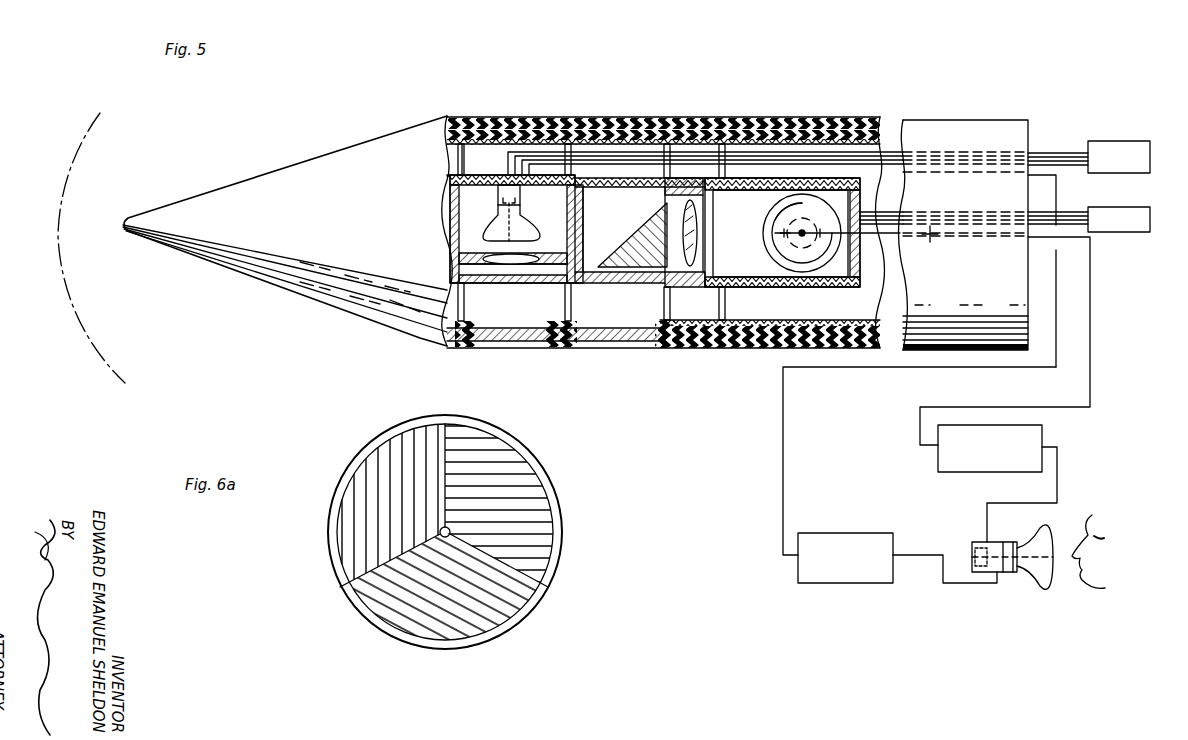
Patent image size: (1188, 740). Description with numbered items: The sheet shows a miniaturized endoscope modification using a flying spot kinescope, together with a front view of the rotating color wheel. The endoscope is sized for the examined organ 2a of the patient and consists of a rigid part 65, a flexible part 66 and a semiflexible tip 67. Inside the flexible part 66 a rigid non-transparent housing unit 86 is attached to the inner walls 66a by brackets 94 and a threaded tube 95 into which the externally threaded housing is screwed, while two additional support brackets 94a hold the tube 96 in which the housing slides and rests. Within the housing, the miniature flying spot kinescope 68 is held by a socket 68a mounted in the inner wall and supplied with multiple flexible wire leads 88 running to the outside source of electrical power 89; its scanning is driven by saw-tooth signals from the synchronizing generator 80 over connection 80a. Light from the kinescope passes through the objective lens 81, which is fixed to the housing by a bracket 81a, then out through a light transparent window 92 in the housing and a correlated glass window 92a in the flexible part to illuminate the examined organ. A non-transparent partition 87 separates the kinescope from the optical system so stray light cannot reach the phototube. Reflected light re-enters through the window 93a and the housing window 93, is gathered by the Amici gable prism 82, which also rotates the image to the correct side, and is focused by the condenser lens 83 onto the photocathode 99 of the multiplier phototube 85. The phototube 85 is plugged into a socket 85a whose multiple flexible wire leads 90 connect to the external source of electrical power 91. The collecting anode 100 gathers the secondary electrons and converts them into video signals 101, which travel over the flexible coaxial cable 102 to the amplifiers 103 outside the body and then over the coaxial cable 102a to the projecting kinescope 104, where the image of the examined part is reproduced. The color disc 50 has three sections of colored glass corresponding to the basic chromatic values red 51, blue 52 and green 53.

In FIG. 5, the examined organ 2a is at (108, 360).
In FIG. 5, the semiflexible tip 67 is at (318, 150).
In FIG. 5, the flexible part 66 is at (752, 122).
In FIG. 5, the inner walls 66a is at (632, 140).
In FIG. 5, the additional support brackets 94a is at (688, 130).
In FIG. 5, the brackets 94 is at (447, 160).
In FIG. 5, the threaded tube 95 is at (447, 182).
In FIG. 5, the multiple flexible wire leads 88 is at (522, 150).
In FIG. 5, the source of electrical power 89 is at (1142, 141).
In FIG. 5, the multiple flexible wire leads 90 is at (1058, 212).
In FIG. 5, the source of electrical power 91 is at (1108, 210).
In FIG. 5, the rigid part 65 is at (948, 122).
In FIG. 5, the bracket 81a is at (471, 252).
In FIG. 5, the housing unit 86 is at (540, 176).
In FIG. 5, the socket 68a is at (521, 196).
In FIG. 5, the miniature flying spot kinescope 68 is at (528, 237).
In FIG. 5, the objective lens 81 is at (509, 265).
In FIG. 5, the light transparent window 92 is at (530, 284).
In FIG. 5, the window 92a is at (503, 342).
In FIG. 5, the non-transparent partition 87 is at (580, 230).
In FIG. 5, the tube 96 is at (634, 186).
In FIG. 5, the prism 82 is at (645, 241).
In FIG. 5, the condenser lens 83 is at (703, 236).
In FIG. 5, the light transparent window 93 is at (623, 284).
In FIG. 5, the window 93a is at (633, 343).
In FIG. 5, the multiplier phototube 85 is at (845, 282).
In FIG. 5, the collecting anode 100 is at (800, 231).
In FIG. 5, the photocathode 99 is at (772, 257).
In FIG. 5, the socket 85a is at (776, 239).
In FIG. 5, the video signals 101 is at (803, 247).
In FIG. 5, the flexible coaxial cable 102 is at (1090, 337).
In FIG. 5, the amplifiers 103 is at (985, 473).
In FIG. 5, the coaxial cable 102a is at (1058, 476).
In FIG. 5, the conductor 80a is at (784, 470).
In FIG. 5, the synchronizing generator 80 is at (840, 533).
In FIG. 5, the projecting kinescope 104 is at (1010, 574).
In FIG. 6a, the color filter disk 50 is at (564, 467).
In FIG. 6a, the red section 51 is at (385, 456).
In FIG. 6a, the blue section 52 is at (530, 512).
In FIG. 6a, the green section 53 is at (452, 618).